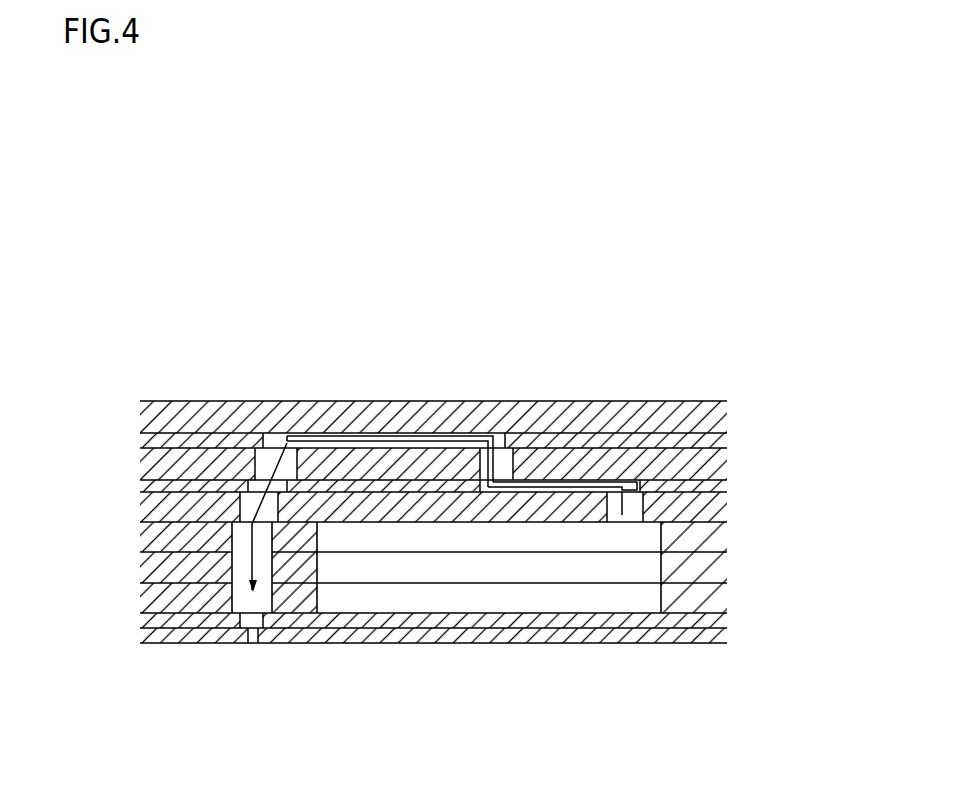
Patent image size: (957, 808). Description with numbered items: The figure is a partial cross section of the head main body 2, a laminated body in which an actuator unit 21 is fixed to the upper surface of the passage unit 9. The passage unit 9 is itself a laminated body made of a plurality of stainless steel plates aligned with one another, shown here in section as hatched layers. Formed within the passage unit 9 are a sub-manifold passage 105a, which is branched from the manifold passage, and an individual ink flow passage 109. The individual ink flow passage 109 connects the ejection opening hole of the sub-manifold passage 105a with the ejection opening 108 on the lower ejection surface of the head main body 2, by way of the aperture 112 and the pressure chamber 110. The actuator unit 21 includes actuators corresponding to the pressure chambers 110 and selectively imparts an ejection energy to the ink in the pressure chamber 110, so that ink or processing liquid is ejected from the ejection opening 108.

The actuator unit 21 is at (720, 416).
The head main body 2 is at (843, 347).
The passage unit 9 is at (768, 433).
The pressure chamber 110 is at (389, 436).
The aperture 112 is at (561, 483).
The individual ink flow passage 109 is at (252, 572).
The ejection opening 108 is at (250, 645).
The sub-manifold passage 105a is at (318, 568).